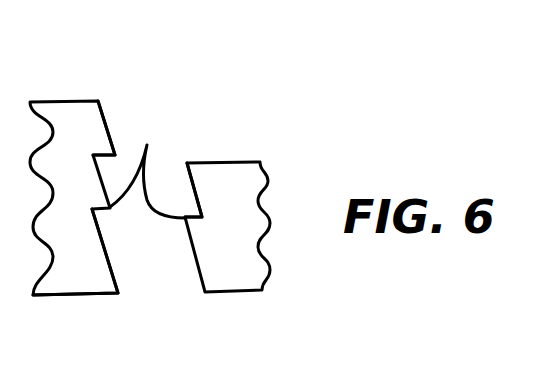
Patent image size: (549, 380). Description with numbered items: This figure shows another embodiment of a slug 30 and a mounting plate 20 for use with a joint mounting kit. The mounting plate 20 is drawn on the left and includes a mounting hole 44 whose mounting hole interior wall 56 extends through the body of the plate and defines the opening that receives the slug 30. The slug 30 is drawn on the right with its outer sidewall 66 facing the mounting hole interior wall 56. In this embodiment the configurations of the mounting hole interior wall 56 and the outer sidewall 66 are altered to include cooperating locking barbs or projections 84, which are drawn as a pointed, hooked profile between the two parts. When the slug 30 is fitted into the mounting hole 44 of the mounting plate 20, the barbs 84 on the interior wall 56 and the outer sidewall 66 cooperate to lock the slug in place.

The mounting plate 20 is at (65, 113).
The mounting hole interior wall 56 is at (107, 122).
The mounting hole 44 is at (115, 284).
The locking barbs or projections 84 is at (150, 141).
The slug 30 is at (230, 175).
The outer sidewall 66 is at (185, 183).